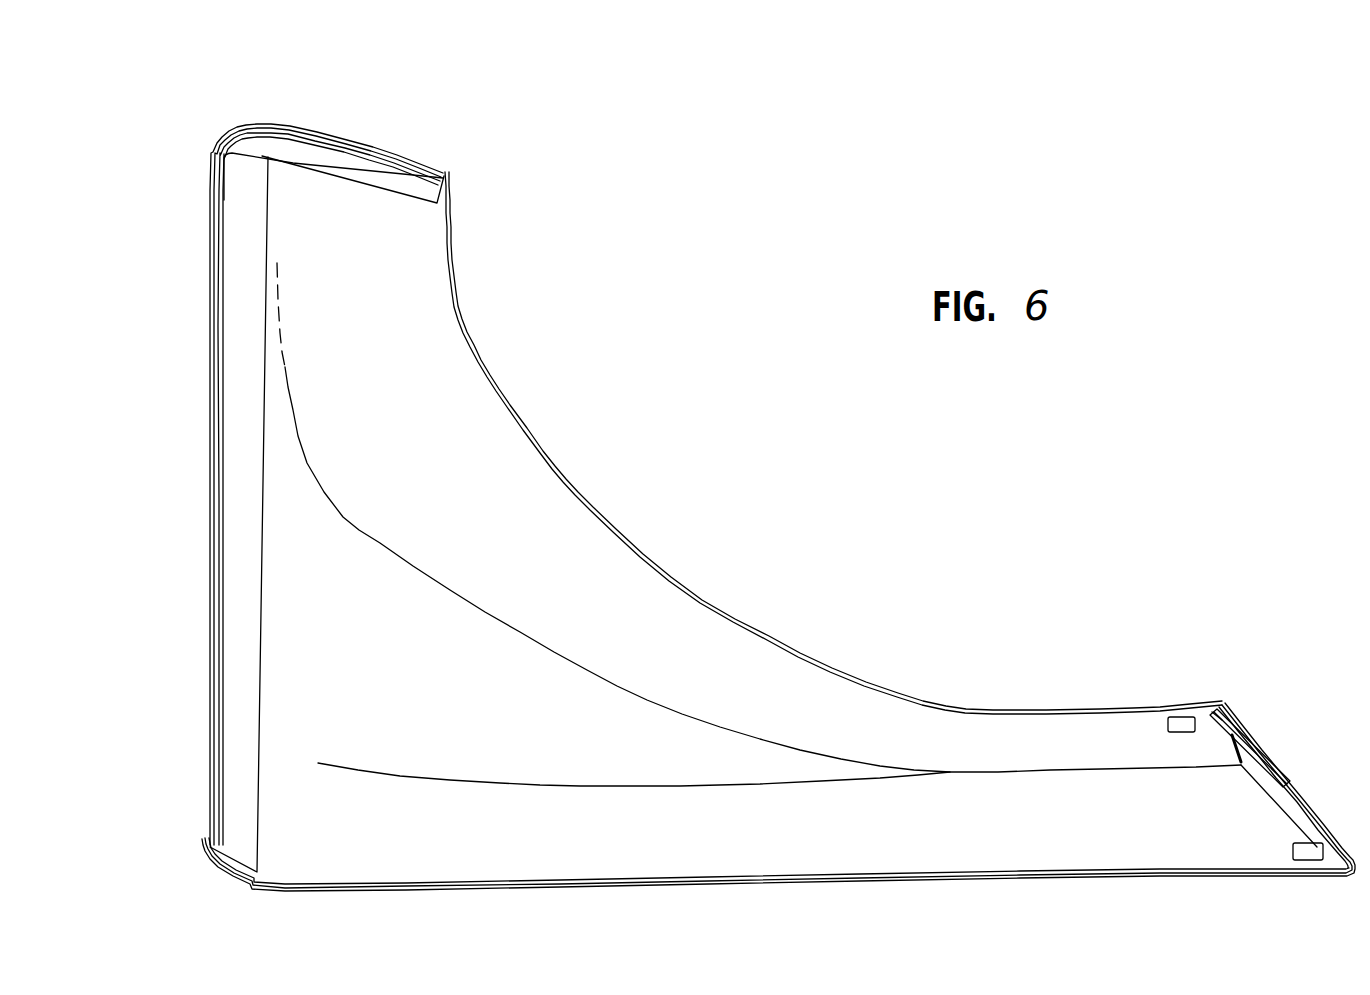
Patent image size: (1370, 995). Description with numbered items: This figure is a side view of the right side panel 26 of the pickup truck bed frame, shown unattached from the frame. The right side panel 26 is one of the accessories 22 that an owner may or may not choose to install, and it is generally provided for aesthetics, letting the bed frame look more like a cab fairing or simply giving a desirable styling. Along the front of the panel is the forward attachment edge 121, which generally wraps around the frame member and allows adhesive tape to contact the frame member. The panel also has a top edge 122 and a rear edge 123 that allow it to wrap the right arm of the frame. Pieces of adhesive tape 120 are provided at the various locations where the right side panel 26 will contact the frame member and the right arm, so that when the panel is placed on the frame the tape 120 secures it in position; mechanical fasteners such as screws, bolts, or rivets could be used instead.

The accessories 22 is at (620, 585).
The right side panel 26 is at (743, 667).
The adhesive tape 120 is at (347, 160).
The forward attachment edge 121 is at (208, 478).
The top edge 122 is at (297, 126).
The rear edge 123 is at (1270, 755).